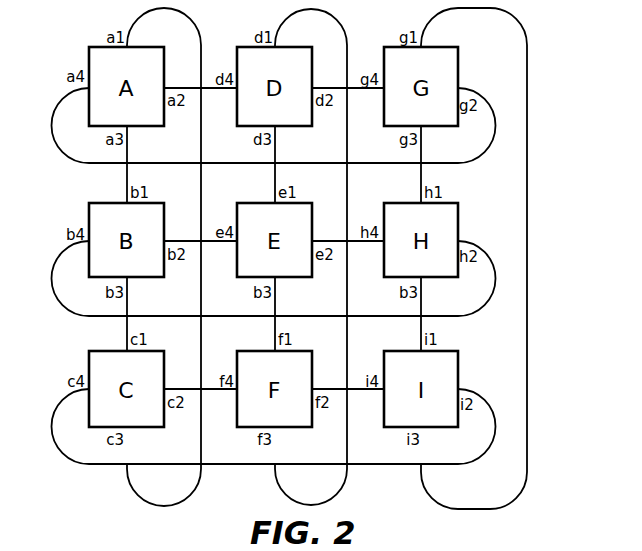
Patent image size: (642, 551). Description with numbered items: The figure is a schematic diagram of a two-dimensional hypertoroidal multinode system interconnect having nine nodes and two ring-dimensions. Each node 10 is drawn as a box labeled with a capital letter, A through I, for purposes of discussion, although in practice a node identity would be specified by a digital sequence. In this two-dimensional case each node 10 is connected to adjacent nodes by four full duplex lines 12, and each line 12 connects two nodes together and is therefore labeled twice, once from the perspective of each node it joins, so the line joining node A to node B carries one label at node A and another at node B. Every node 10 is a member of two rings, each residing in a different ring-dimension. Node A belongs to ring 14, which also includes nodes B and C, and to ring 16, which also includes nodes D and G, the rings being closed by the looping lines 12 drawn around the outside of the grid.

The node 10 is at (396, 420).
The full duplex line 12 is at (53, 138).
The ring 14 is at (191, 21).
The ring 16 is at (69, 159).